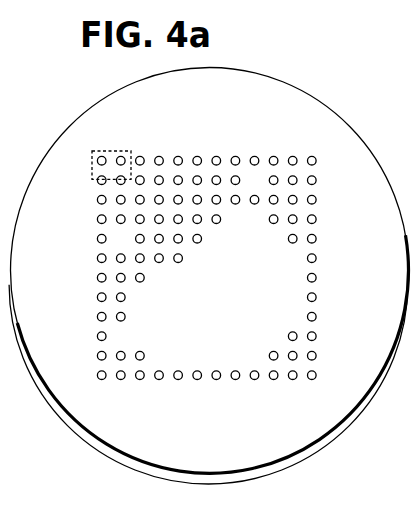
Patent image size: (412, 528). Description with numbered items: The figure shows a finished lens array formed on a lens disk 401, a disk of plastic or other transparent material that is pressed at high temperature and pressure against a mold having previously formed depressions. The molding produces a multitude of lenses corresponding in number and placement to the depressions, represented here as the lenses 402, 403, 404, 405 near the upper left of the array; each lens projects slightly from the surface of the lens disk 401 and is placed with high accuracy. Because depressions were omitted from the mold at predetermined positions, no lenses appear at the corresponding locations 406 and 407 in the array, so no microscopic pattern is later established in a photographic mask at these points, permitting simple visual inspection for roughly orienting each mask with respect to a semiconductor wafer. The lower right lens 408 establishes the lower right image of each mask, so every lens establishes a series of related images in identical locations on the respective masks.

The lens disk 401 is at (108, 448).
The lens 402 is at (102, 156).
The lens 403 is at (124, 158).
The lens 404 is at (98, 181).
The lens 405 is at (118, 184).
The location 406 is at (253, 185).
The location 407 is at (122, 239).
The lower right lens 408 is at (312, 380).